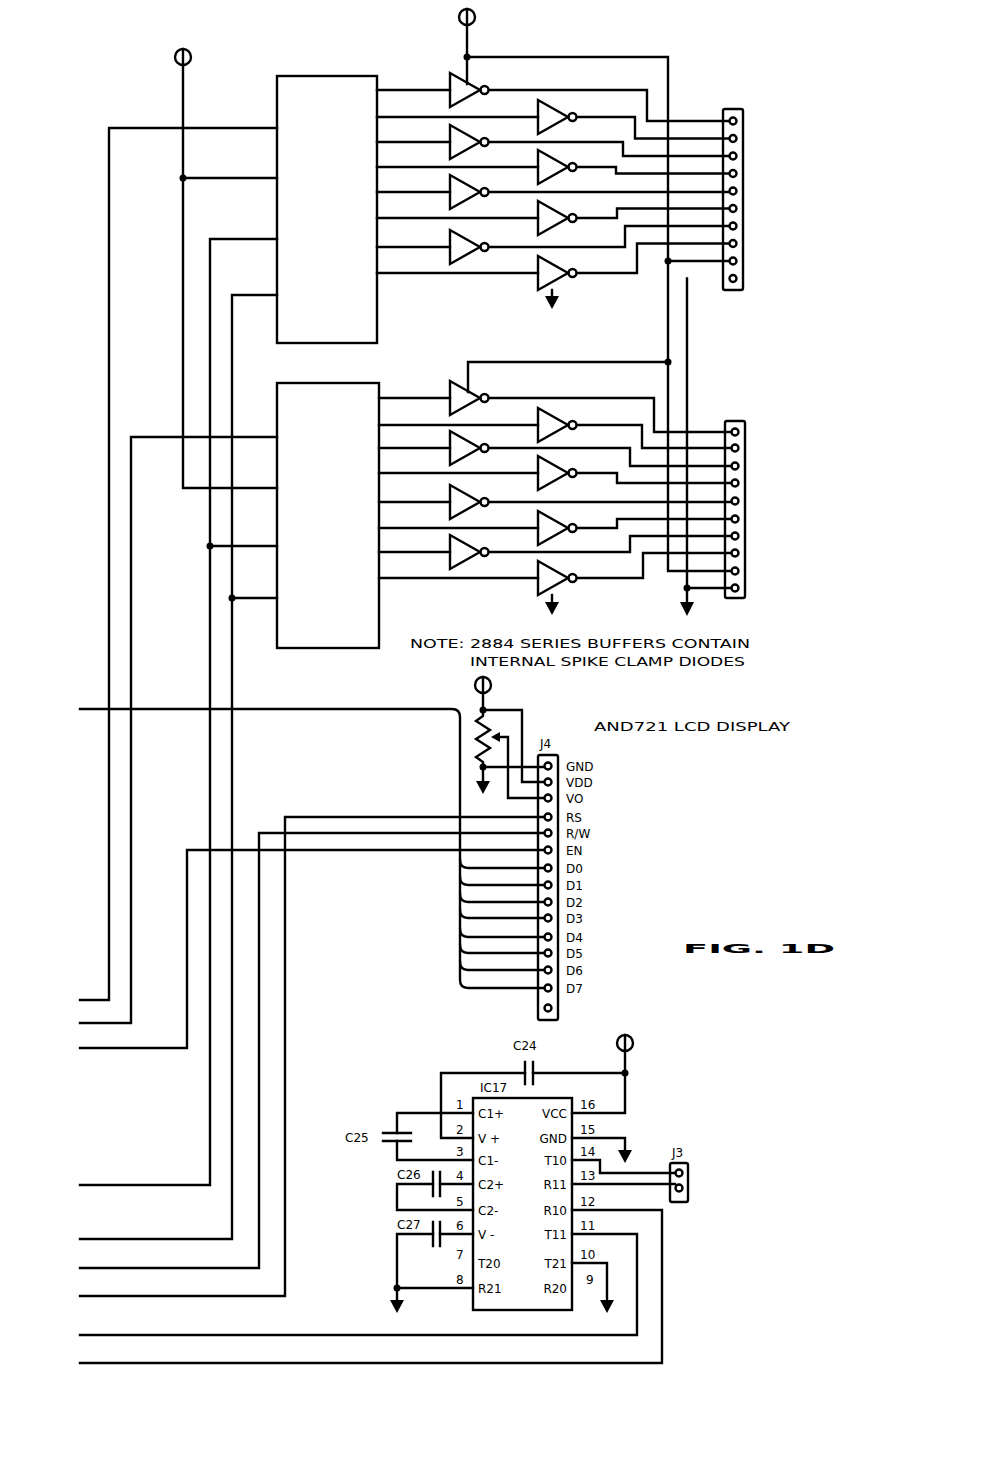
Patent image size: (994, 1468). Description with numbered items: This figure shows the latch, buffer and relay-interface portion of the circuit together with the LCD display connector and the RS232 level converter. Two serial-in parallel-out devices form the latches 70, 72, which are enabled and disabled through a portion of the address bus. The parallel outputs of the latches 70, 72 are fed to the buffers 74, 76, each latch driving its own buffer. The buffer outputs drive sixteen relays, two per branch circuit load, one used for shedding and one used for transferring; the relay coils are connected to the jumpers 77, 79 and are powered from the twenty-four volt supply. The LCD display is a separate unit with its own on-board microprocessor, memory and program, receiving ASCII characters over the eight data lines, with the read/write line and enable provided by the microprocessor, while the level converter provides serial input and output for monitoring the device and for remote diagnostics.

The latch 70 is at (355, 75).
The latch 72 is at (369, 376).
The buffer 74 is at (608, 56).
The buffer 76 is at (552, 345).
The jumper J2 77 is at (744, 121).
The jumper J3 79 is at (746, 432).